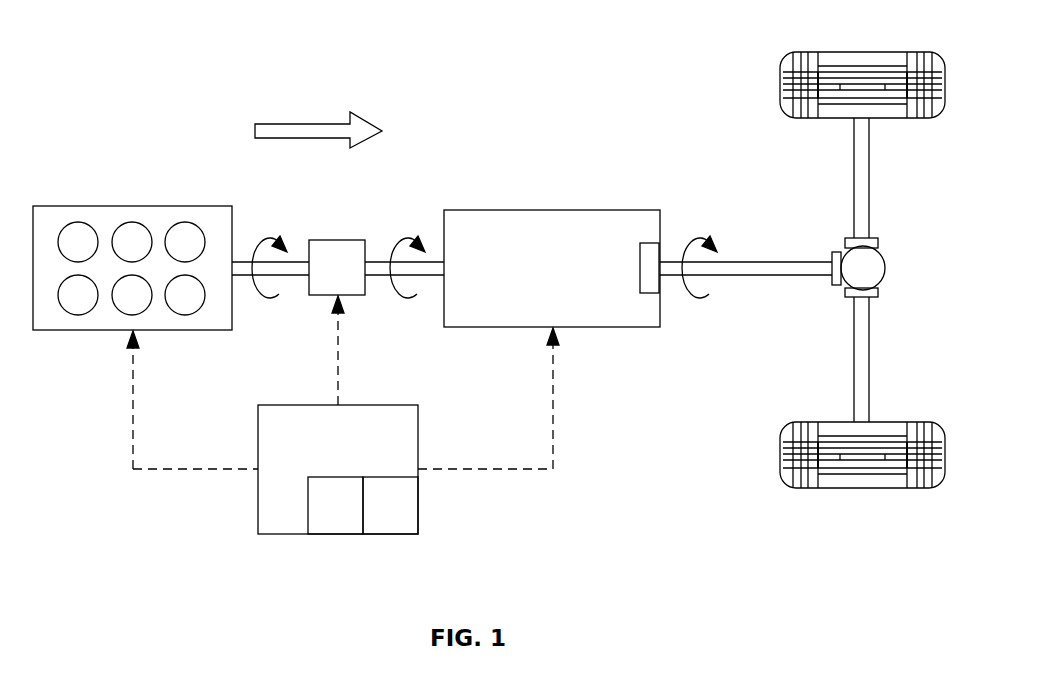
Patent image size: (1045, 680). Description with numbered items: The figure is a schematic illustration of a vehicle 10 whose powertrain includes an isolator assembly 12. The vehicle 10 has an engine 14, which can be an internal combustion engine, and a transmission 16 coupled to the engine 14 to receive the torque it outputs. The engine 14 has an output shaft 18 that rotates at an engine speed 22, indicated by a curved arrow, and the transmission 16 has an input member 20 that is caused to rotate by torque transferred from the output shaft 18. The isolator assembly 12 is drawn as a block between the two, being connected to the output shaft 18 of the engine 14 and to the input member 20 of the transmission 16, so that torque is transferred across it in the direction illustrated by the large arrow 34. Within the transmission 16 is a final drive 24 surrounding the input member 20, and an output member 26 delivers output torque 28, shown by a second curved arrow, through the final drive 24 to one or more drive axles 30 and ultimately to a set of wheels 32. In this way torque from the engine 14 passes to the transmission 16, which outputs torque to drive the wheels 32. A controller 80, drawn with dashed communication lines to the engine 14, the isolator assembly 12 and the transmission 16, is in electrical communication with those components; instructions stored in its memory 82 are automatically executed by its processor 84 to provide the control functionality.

The vehicle 10 is at (122, 34).
The isolator assembly 12 is at (338, 239).
The engine 14 is at (65, 205).
The transmission 16 is at (553, 208).
The output shaft 18 is at (298, 278).
The input member 20 is at (437, 278).
The engine speed 22 is at (270, 242).
The final drive 24 is at (638, 263).
The output member 26 is at (770, 278).
The output torque 28 is at (705, 242).
The drive axle 30 is at (870, 185).
The wheels 32 is at (780, 85).
The arrow 34 is at (298, 122).
The controller 80 is at (258, 508).
The memory 82 is at (335, 505).
The processor 84 is at (390, 505).